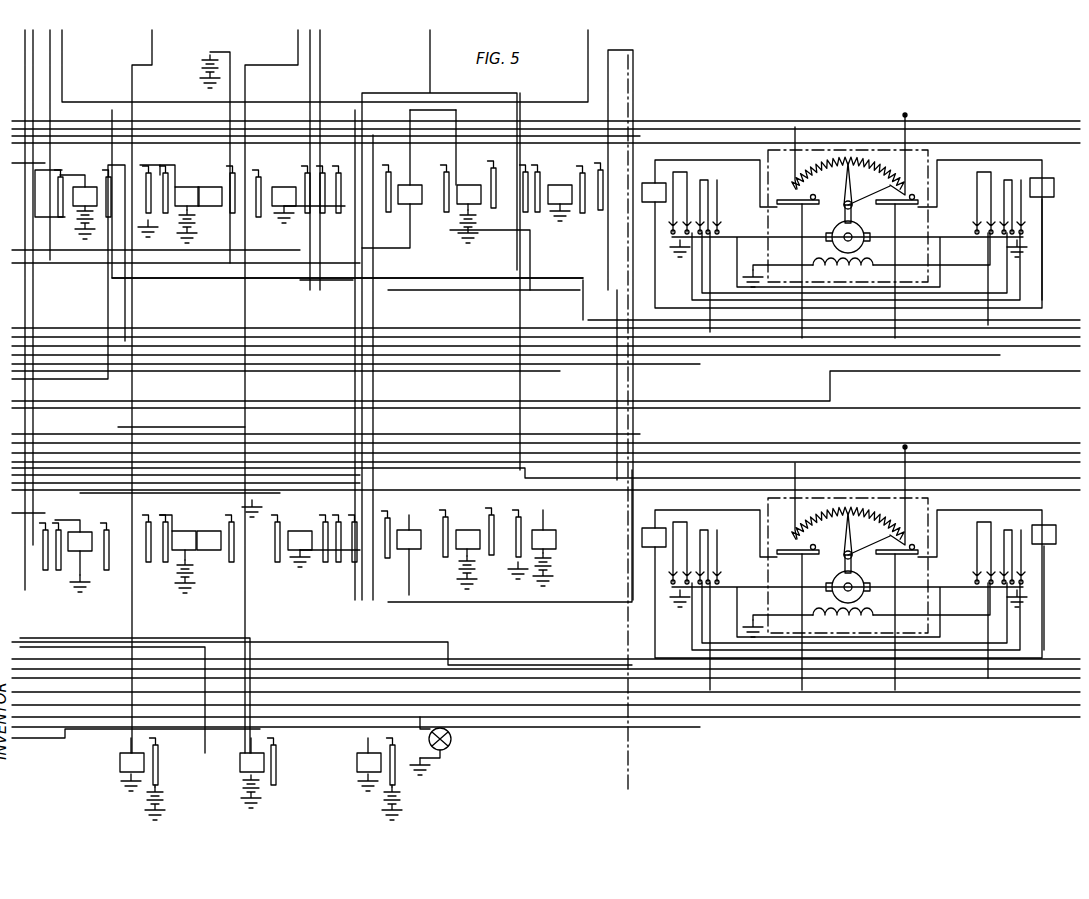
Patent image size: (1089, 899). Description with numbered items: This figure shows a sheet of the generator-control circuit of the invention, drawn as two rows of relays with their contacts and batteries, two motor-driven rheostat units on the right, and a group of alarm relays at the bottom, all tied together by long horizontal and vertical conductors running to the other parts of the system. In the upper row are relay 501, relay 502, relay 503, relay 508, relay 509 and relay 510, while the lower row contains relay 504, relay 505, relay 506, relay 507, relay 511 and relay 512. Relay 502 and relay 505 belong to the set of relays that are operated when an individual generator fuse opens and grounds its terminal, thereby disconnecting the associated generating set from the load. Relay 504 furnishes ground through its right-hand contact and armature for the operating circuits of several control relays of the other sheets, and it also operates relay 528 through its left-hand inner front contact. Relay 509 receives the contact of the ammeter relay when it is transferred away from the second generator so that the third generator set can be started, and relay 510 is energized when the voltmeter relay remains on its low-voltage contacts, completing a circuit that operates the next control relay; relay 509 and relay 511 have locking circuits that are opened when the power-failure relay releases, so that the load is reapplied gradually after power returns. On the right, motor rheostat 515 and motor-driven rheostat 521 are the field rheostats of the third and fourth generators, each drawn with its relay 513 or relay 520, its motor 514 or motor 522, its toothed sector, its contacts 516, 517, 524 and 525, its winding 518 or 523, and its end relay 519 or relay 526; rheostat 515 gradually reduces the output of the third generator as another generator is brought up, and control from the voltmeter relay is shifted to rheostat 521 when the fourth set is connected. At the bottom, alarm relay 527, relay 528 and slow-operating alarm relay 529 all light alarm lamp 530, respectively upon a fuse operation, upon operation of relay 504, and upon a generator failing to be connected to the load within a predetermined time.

The relay 501 is at (84, 194).
The relay 502 is at (188, 194).
The relay 503 is at (290, 202).
The relay 504 is at (78, 530).
The relay 505 is at (200, 528).
The relay 506 is at (298, 545).
The relay 507 is at (412, 549).
The relay 508 is at (414, 195).
The relay 509 is at (470, 200).
The relay 510 is at (556, 182).
The relay 511 is at (470, 548).
The relay 512 is at (553, 538).
The relay 513 is at (653, 183).
The motor 514 is at (848, 230).
The motor rheostat 515 is at (840, 155).
The contact 516 is at (780, 200).
The contact 517 is at (895, 205).
The coil 518 is at (865, 267).
The relay 519 is at (1045, 178).
The relay 520 is at (658, 528).
The motor-driven rheostat 521 is at (870, 512).
The motor 522 is at (847, 584).
The coil 523 is at (868, 618).
The contact 524 is at (782, 553).
The contact 525 is at (897, 555).
The relay 526 is at (1043, 525).
The alarm relay 527 is at (120, 762).
The relay 528 is at (240, 762).
The alarm relay 529 is at (357, 762).
The alarm lamp 530 is at (452, 740).